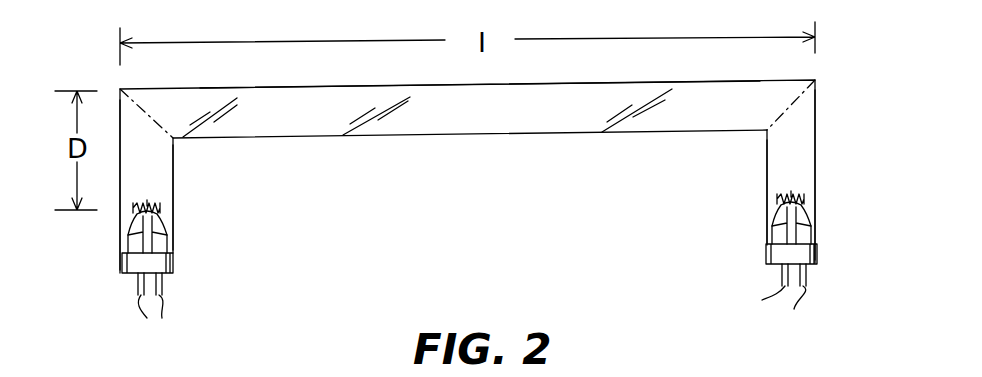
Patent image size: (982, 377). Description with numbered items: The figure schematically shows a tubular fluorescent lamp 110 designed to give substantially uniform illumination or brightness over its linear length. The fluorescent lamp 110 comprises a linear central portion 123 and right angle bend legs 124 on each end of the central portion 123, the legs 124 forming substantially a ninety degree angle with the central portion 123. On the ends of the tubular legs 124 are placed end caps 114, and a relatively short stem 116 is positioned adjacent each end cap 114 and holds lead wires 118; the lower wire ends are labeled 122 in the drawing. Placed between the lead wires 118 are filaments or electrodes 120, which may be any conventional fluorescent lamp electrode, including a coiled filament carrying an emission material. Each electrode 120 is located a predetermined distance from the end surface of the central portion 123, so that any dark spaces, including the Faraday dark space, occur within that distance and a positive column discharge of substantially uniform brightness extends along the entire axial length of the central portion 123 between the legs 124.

The fluorescent lamp 110 is at (534, 146).
The end cap 114 is at (130, 262).
The stem 116 is at (164, 238).
The lead wires 118 is at (131, 221).
The electrode 120 is at (147, 203).
The lead wires 122 is at (796, 306).
The linear central portion 123 is at (617, 84).
The right angle bend legs 124 is at (174, 177).